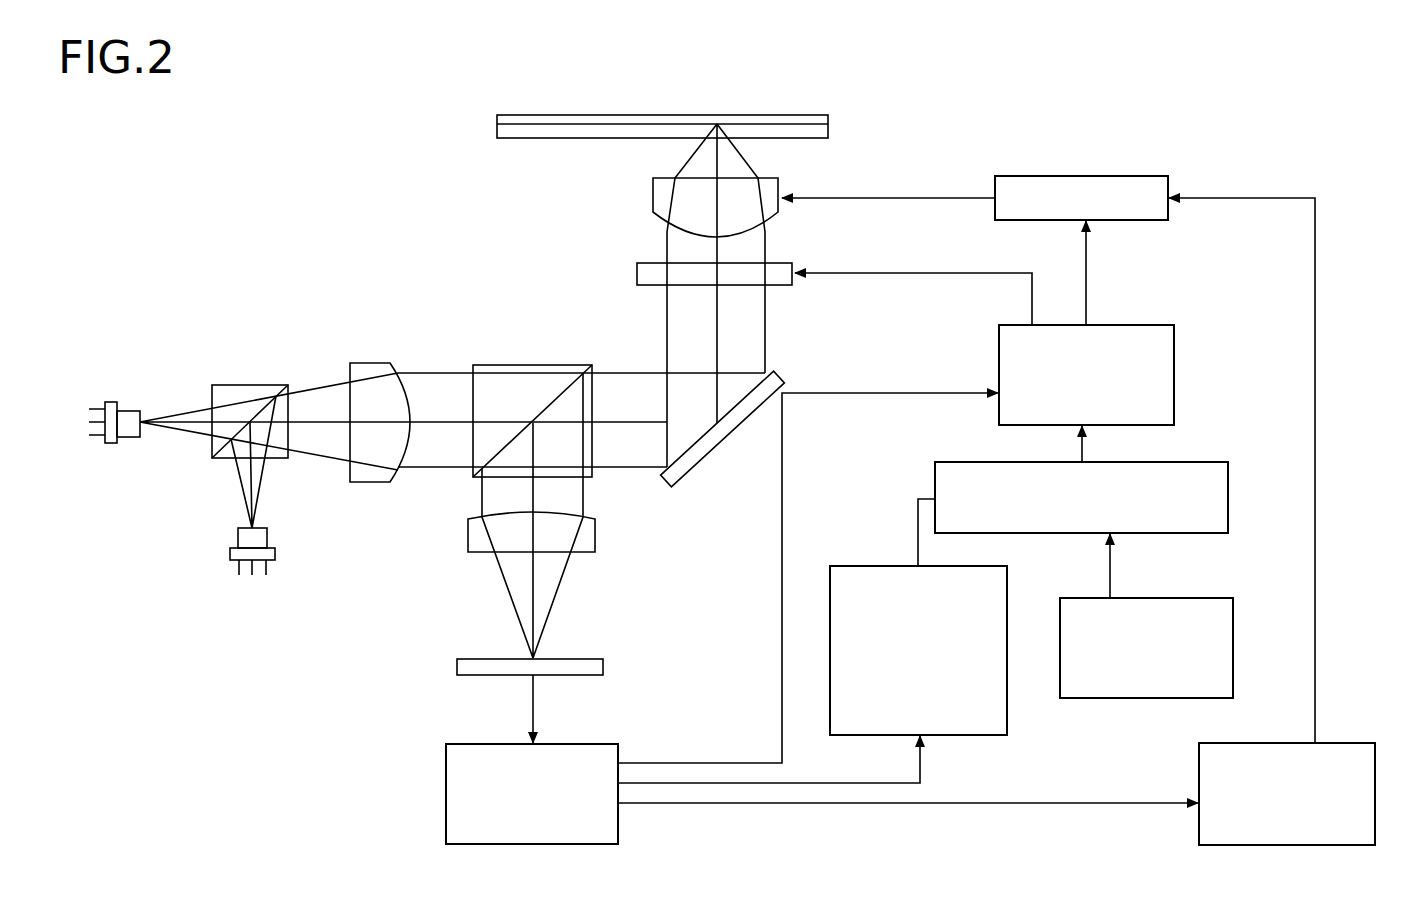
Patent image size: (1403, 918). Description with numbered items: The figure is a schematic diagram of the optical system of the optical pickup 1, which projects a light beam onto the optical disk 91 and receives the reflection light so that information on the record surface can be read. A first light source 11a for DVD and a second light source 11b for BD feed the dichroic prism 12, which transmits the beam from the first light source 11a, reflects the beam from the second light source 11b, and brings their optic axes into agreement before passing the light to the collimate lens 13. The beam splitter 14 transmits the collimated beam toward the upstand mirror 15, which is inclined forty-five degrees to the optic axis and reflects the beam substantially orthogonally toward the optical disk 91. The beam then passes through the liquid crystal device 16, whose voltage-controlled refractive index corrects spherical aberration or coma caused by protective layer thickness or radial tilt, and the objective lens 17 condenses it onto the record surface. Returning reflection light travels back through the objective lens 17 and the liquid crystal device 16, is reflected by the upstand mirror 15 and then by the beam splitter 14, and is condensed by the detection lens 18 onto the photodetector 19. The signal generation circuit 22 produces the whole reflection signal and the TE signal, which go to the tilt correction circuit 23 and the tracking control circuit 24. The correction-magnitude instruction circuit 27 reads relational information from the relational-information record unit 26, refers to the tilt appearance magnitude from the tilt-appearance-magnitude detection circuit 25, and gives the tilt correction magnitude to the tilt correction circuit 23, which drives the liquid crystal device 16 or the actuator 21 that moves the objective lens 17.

The optical pickup 1 is at (383, 240).
The first light source 11a is at (110, 398).
The second light source 11b is at (277, 562).
The dichroic prism 12 is at (257, 383).
The collimate lens 13 is at (377, 363).
The beam splitter 14 is at (532, 358).
The upstand mirror 15 is at (712, 453).
The liquid crystal device 16 is at (783, 287).
The objective lens 17 is at (777, 213).
The detection lens 18 is at (592, 553).
The photodetector 19 is at (573, 675).
The actuator 21 is at (1145, 222).
The signal generation circuit 22 is at (446, 805).
The tilt correction circuit 23 is at (1175, 378).
The tracking control circuit 24 is at (1340, 742).
The tilt-appearance-magnitude detection circuit 25 is at (977, 735).
The relational-information record unit 26 is at (1234, 632).
The correction-magnitude instruction circuit 27 is at (1229, 495).
The optical disk 91 is at (798, 140).